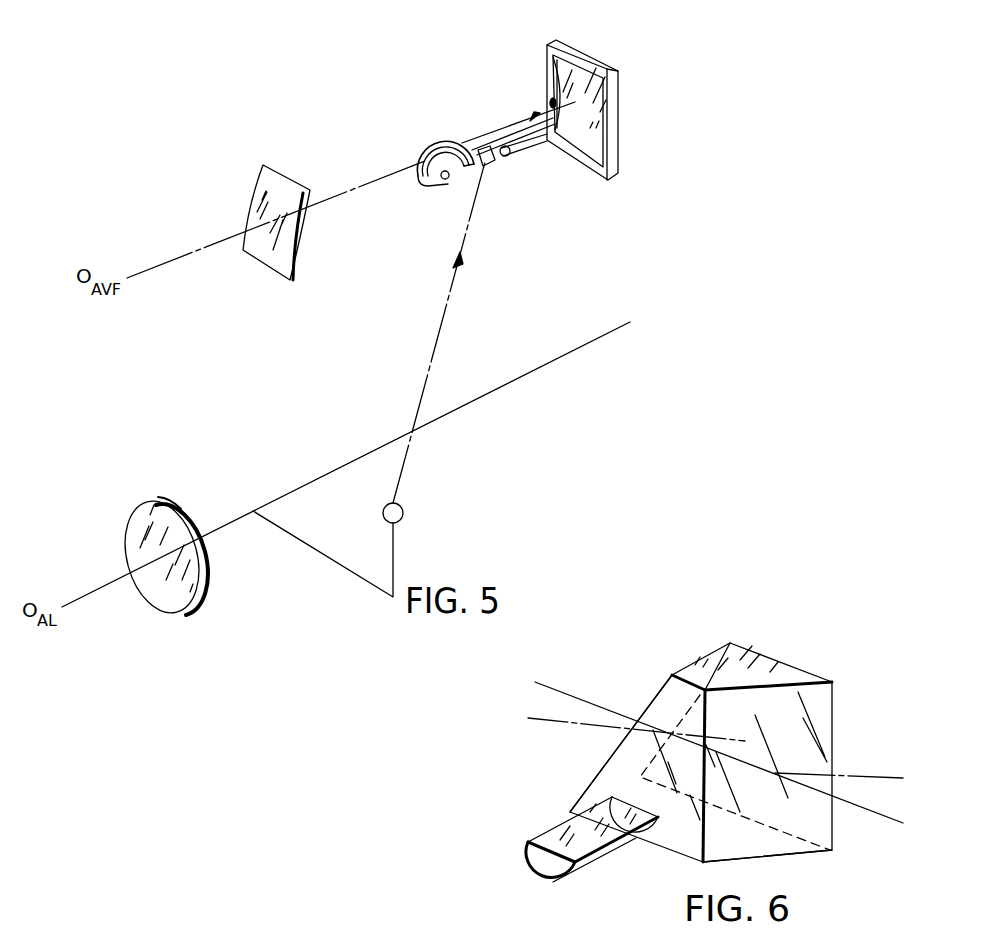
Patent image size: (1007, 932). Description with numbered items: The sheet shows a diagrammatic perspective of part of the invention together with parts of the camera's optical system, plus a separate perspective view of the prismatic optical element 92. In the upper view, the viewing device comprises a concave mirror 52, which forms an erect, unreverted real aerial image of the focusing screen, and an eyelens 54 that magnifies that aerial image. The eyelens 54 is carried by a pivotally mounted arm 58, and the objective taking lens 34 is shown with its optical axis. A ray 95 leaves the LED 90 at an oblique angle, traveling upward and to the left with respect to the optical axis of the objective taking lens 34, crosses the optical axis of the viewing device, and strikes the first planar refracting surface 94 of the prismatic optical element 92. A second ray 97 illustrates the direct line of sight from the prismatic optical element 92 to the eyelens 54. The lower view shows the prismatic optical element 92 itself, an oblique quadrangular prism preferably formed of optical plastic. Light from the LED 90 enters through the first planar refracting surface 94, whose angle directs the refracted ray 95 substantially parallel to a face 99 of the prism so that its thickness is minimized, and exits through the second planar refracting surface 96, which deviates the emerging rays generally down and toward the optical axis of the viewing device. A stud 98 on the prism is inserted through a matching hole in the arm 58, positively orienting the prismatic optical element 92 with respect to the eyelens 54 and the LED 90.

In FIG. 5, the objective taking lens 34 is at (183, 612).
In FIG. 5, the concave mirror 52 is at (243, 198).
In FIG. 5, the eyelens 54 is at (618, 122).
In FIG. 5, the arm 58 is at (465, 175).
In FIG. 5, the LED 90 is at (404, 513).
In FIG. 5, the prismatic optical element 92 is at (493, 163).
In FIG. 6, the prismatic optical element 92 is at (775, 660).
In FIG. 6, the first planar refracting surface 94 is at (797, 848).
In FIG. 5, the ray 95 is at (433, 362).
In FIG. 6, the ray 95 is at (877, 775).
In FIG. 6, the second planar refracting surface 96 is at (648, 703).
In FIG. 5, the ray 97 is at (520, 130).
In FIG. 6, the ray 97 is at (570, 720).
In FIG. 6, the stud 98 is at (600, 863).
In FIG. 6, the face 99 is at (630, 757).